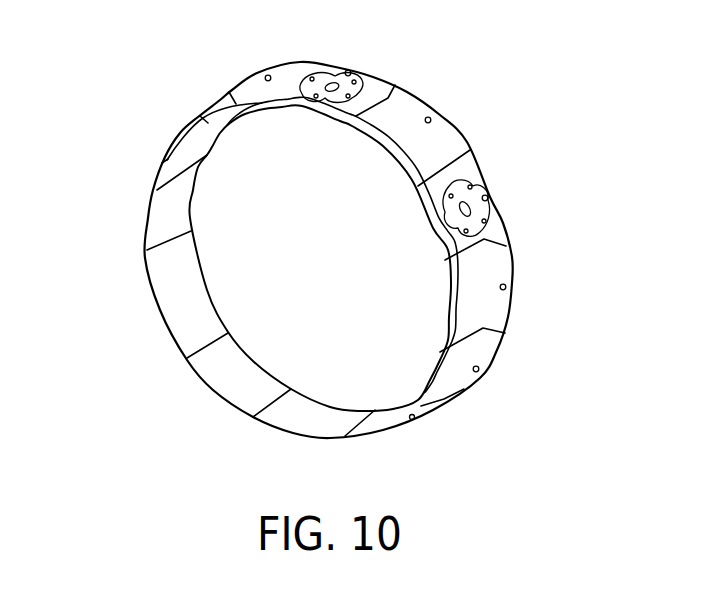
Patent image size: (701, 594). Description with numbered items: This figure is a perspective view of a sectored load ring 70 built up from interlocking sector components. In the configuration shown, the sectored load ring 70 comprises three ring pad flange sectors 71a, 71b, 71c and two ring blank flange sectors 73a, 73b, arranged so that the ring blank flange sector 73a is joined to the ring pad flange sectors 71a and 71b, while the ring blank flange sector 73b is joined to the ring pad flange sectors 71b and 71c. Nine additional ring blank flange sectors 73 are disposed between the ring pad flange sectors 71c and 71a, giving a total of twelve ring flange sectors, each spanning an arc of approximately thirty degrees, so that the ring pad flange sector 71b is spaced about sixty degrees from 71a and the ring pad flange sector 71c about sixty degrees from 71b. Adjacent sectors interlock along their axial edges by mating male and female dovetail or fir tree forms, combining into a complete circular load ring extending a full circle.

The sectored load ring 70 is at (188, 410).
The ring blank flange sector 73 is at (152, 250).
The ring blank flange sector 73a is at (258, 68).
The ring blank flange sector 73b is at (452, 133).
The ring pad flange sector 71a is at (205, 154).
The ring pad flange sector 71b is at (318, 125).
The ring pad flange sector 71c is at (433, 234).